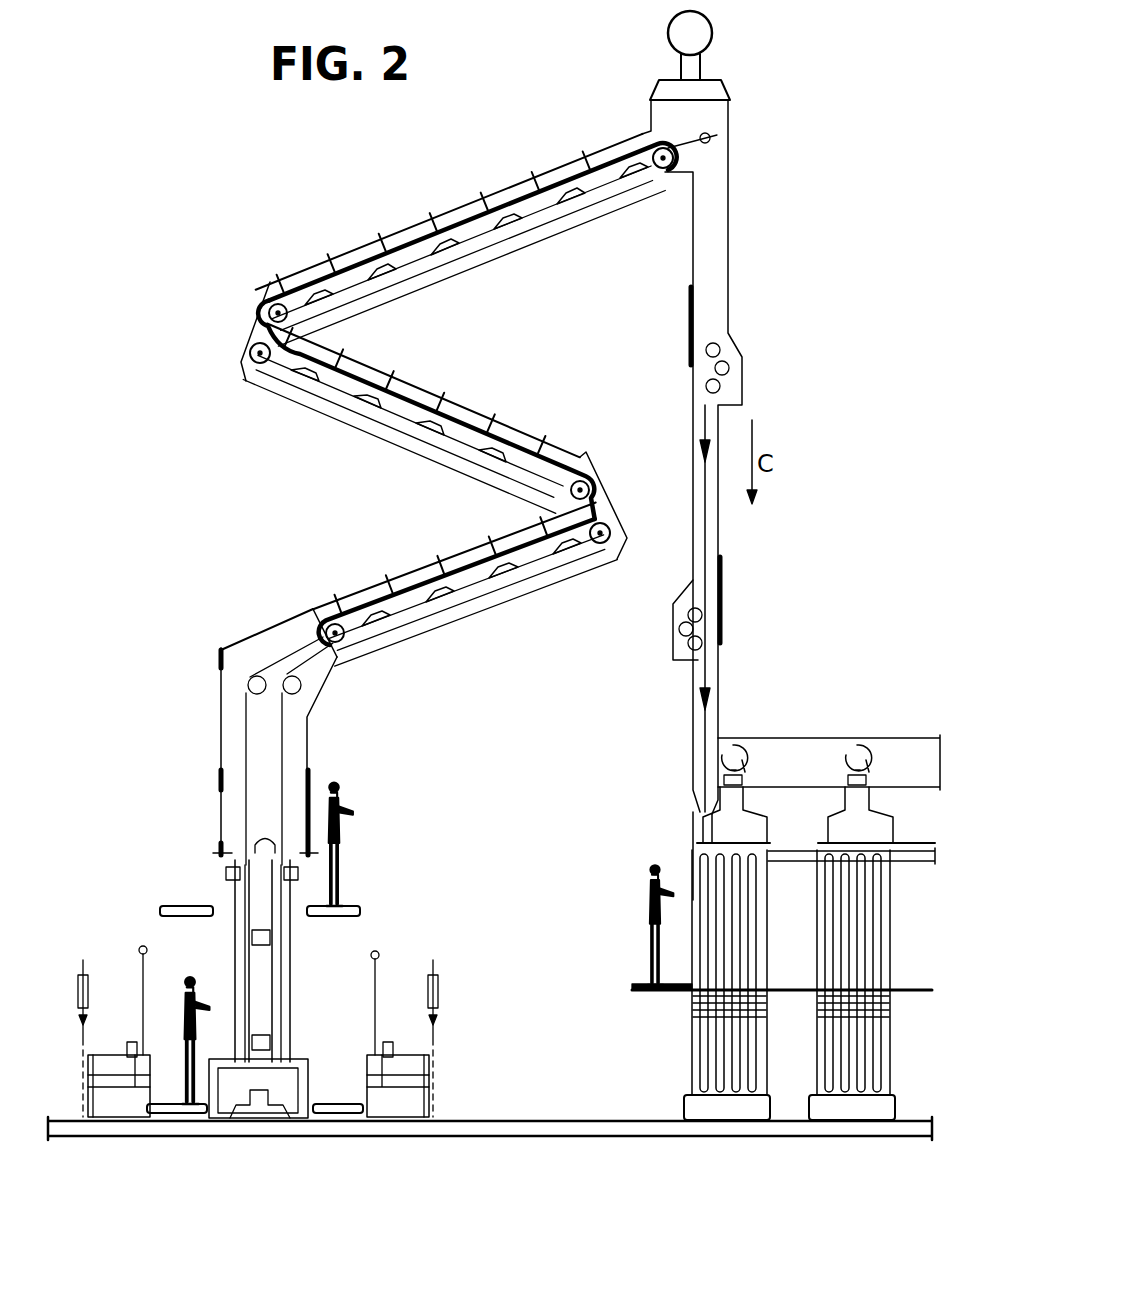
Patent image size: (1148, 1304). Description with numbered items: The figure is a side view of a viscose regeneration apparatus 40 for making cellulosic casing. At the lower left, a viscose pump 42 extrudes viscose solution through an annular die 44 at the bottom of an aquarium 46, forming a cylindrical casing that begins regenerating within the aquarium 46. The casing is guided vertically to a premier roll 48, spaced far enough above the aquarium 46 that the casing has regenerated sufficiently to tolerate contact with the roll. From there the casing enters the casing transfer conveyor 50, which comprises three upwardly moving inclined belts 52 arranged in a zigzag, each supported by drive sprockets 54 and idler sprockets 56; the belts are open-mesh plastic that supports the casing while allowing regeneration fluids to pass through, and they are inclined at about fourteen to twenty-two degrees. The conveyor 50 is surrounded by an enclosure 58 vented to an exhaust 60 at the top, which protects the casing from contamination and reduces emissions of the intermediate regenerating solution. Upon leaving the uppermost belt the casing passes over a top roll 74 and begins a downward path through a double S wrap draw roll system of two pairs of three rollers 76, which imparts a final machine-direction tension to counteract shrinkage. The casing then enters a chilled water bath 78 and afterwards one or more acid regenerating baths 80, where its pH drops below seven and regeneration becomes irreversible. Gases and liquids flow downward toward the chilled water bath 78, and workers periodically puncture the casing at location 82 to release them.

The viscose regeneration apparatus 40 is at (242, 527).
The viscose pump 42 is at (130, 1050).
The annular die 44 is at (280, 1063).
The aquarium 46 is at (283, 893).
The premier roll 48 is at (290, 688).
The casing transfer conveyor 50 is at (541, 186).
The inclined belts 52 is at (492, 225).
The drive sprockets 54 is at (672, 172).
The idler sprockets 56 is at (298, 320).
The enclosure 58 is at (313, 703).
The exhaust 60 is at (668, 33).
The top roll 74 is at (712, 137).
The rollers 76 is at (672, 630).
The chilled water bath 78 is at (692, 1026).
The acid regenerating baths 80 is at (872, 1048).
The puncture location 82 is at (680, 882).